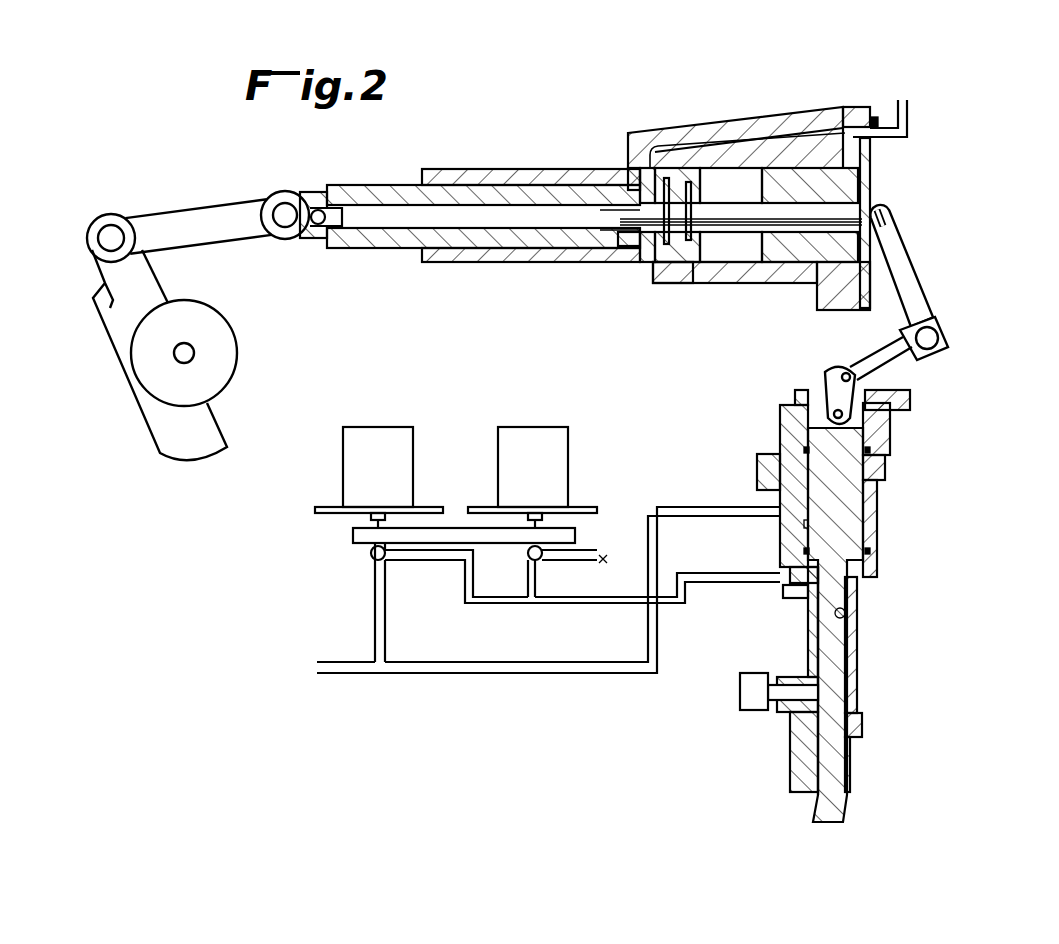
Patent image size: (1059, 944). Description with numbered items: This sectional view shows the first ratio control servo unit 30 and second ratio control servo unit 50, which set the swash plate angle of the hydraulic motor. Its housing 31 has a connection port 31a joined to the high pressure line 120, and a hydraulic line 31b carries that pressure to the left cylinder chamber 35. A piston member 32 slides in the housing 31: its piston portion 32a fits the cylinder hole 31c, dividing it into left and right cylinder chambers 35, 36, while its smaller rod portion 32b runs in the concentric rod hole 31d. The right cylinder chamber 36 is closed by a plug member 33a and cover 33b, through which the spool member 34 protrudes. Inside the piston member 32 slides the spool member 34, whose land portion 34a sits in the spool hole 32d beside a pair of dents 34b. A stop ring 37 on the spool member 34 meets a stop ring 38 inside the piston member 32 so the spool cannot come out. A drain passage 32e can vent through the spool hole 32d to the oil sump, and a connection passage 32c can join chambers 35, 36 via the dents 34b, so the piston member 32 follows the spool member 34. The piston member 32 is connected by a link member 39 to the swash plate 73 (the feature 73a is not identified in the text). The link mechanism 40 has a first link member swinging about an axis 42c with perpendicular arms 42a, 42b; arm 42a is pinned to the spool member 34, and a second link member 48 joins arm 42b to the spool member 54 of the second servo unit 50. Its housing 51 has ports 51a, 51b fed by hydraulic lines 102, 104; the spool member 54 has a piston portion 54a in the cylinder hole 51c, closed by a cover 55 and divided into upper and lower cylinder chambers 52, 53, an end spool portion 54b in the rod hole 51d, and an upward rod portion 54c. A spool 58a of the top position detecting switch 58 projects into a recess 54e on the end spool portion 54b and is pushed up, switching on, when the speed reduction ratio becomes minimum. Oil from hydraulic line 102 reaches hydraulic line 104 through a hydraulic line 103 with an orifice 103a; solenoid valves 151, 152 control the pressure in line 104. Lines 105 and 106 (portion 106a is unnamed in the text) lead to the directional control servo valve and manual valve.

The first ratio control servo unit 30 is at (592, 98).
The housing 31 is at (487, 169).
The connection port 31a is at (878, 117).
The hydraulic line 31b is at (740, 140).
The cylinder hole 31c is at (742, 263).
The rod hole 31d is at (483, 250).
The piston member 32 is at (362, 185).
The piston portion 32a is at (665, 284).
The rod portion 32b is at (407, 250).
The connection passage 32c is at (612, 185).
The spool hole 32d is at (527, 222).
The drain passage 32e is at (632, 250).
The plug member 33a is at (848, 190).
The cover 33b is at (870, 150).
The spool member 34 is at (725, 226).
The land portion 34a is at (608, 213).
The dents 34b is at (628, 165).
The left cylinder chamber 35 is at (614, 268).
The right cylinder chamber 36 is at (741, 197).
The stop ring 37 is at (676, 263).
The stop ring 38 is at (700, 240).
The link member 39 is at (192, 208).
The link mechanism 40 is at (945, 303).
The arm 42a is at (905, 270).
The arm 42b is at (893, 368).
The axis 42c is at (900, 340).
The second link member 48 is at (835, 380).
The second ratio control servo unit 50 is at (916, 586).
The housing 51 is at (872, 530).
The port 51a is at (770, 496).
The port 51b is at (780, 590).
The cylinder hole 51c is at (866, 490).
The rod hole 51d is at (846, 614).
The upper cylinder chamber 52 is at (803, 522).
The lower cylinder chamber 53 is at (790, 572).
The spool member 54 is at (845, 517).
The piston portion 54a is at (871, 563).
The end spool portion 54b is at (842, 650).
The rod portion 54c is at (880, 430).
The recess 54e is at (857, 720).
The cover 55 is at (780, 415).
The top position detecting switch 58 is at (752, 700).
The spool 58a is at (790, 712).
The swash plate 73 is at (208, 460).
The cam 73a is at (190, 353).
The hydraulic line 102 is at (517, 674).
The hydraulic line 103 is at (375, 625).
The orifice 103a is at (380, 590).
The hydraulic line 104 is at (562, 603).
The line 105 is at (528, 584).
The hydraulic line 106 is at (593, 553).
The branch conduit 106a is at (562, 562).
The high pressure line 120 is at (907, 112).
The solenoid valve 151 is at (405, 427).
The solenoid valve 152 is at (558, 427).